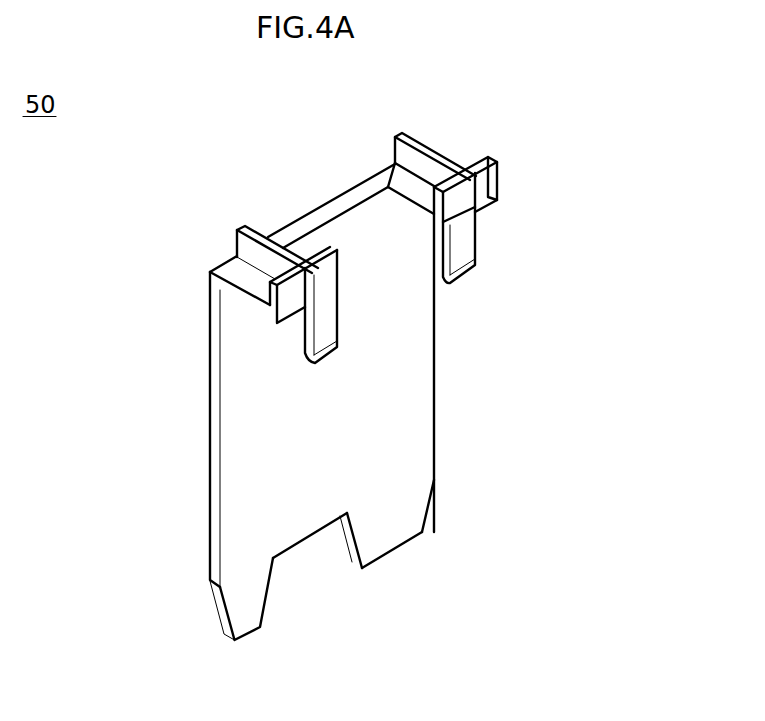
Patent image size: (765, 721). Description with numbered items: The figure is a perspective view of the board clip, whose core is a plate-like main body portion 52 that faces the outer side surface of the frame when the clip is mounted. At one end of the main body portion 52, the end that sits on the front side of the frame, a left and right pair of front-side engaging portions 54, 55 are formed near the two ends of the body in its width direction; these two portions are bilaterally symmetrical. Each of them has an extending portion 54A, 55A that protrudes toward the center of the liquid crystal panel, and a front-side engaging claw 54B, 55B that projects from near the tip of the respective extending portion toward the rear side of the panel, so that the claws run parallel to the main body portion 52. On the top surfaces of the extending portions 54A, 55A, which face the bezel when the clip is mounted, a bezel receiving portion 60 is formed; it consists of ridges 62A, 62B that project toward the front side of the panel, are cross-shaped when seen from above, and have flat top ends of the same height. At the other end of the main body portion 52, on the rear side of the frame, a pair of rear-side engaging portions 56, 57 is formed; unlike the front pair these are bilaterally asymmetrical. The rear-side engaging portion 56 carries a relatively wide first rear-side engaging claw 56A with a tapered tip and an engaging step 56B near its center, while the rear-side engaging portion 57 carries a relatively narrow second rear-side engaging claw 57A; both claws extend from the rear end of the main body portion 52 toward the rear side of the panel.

The main body portion 52 is at (408, 387).
The front-side engaging portion 54 is at (518, 224).
The extending portion 54A is at (478, 264).
The front-side engaging claw 54B is at (478, 230).
The front-side engaging portion 55 is at (203, 318).
The extending portion 55A is at (248, 306).
The front-side engaging claw 55B is at (307, 337).
The rear-side engaging portion 56 is at (405, 569).
The first rear-side engaging claw 56A is at (393, 530).
The engaging step 56B is at (346, 544).
The rear-side engaging portion 57 is at (245, 614).
The second rear-side engaging claw 57A is at (258, 593).
The bezel receiving portion 60 is at (334, 171).
The ridge 62A is at (418, 140).
The ridge 62B is at (252, 228).